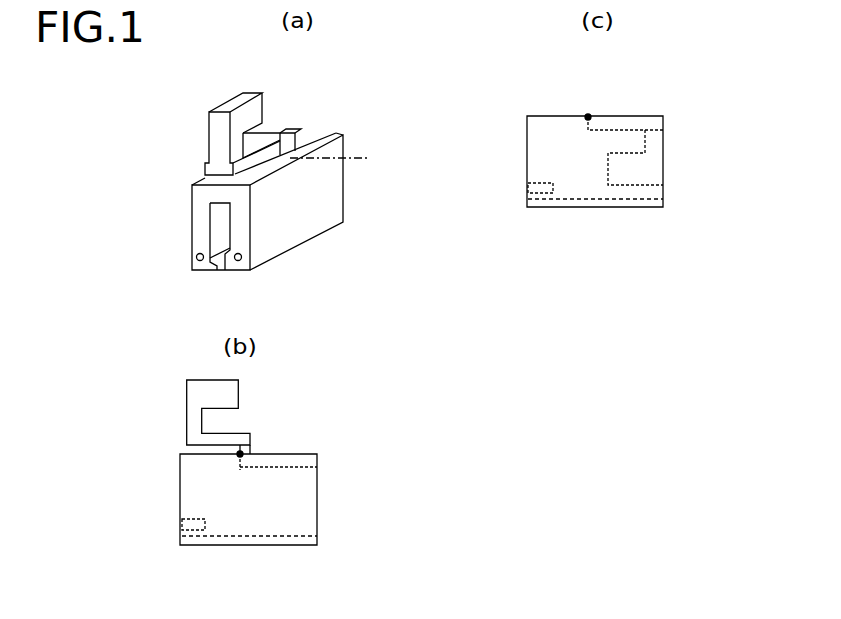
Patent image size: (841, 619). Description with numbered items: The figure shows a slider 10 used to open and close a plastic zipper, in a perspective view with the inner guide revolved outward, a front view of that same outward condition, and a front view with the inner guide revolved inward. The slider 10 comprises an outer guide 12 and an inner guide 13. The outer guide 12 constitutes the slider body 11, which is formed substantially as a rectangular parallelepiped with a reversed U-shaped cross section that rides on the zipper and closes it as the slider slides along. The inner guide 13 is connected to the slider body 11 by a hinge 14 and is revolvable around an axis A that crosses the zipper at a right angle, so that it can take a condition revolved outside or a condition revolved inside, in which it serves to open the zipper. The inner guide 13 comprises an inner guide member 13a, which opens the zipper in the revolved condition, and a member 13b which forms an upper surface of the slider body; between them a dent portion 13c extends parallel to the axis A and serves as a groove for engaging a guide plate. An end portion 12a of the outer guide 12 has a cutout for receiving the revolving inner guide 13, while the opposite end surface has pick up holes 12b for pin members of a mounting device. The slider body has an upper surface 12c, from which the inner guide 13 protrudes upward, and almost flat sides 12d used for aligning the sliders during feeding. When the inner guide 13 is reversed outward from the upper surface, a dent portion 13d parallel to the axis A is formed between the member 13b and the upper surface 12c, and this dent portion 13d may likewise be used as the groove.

The slider 10 is at (267, 245).
The slider body 11 is at (277, 238).
The outer guide 12 is at (237, 222).
The end portion 12a is at (328, 138).
The pick up holes 12b is at (528, 188).
The upper surface 12c is at (337, 131).
The flat sides 12d is at (320, 211).
The inner guide 13 is at (247, 97).
The inner guide member 13a is at (265, 98).
The member 13b is at (198, 418).
The dent portion 13c is at (256, 131).
The dent portion 13d is at (262, 170).
The hinge 14 is at (302, 140).
The axis A is at (225, 487).